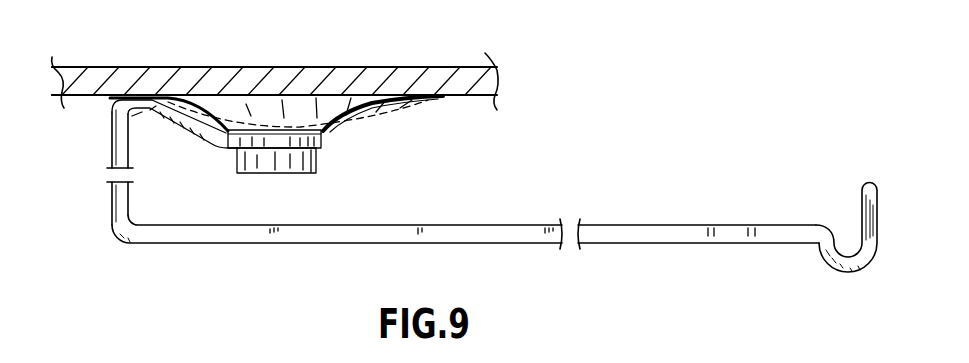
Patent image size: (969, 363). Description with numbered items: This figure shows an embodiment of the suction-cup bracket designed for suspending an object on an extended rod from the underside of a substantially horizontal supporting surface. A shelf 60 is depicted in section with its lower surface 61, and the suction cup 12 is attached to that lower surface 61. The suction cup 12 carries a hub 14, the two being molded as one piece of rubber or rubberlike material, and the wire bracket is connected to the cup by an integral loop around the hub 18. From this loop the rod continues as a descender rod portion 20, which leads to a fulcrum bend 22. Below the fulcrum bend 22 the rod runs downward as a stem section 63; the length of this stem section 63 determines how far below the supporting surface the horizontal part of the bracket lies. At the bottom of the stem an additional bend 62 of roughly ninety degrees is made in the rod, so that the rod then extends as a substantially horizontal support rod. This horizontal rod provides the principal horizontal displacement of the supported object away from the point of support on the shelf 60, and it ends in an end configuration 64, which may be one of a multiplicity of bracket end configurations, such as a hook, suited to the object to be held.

The suction cup 12 is at (372, 108).
The hub 14 is at (283, 176).
The integral loop around the hub 18 is at (321, 142).
The descender rod portion 20 is at (172, 143).
The fulcrum bend 22 is at (105, 107).
The shelf 60 is at (236, 76).
The lower surface 61 is at (92, 104).
The additional bend 62 is at (427, 244).
The stem section 63 is at (112, 198).
The end configuration 64 is at (827, 266).